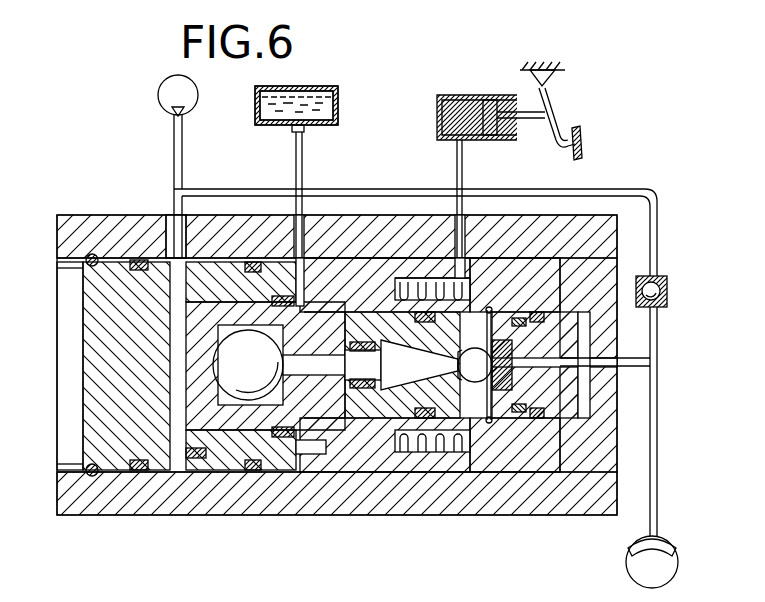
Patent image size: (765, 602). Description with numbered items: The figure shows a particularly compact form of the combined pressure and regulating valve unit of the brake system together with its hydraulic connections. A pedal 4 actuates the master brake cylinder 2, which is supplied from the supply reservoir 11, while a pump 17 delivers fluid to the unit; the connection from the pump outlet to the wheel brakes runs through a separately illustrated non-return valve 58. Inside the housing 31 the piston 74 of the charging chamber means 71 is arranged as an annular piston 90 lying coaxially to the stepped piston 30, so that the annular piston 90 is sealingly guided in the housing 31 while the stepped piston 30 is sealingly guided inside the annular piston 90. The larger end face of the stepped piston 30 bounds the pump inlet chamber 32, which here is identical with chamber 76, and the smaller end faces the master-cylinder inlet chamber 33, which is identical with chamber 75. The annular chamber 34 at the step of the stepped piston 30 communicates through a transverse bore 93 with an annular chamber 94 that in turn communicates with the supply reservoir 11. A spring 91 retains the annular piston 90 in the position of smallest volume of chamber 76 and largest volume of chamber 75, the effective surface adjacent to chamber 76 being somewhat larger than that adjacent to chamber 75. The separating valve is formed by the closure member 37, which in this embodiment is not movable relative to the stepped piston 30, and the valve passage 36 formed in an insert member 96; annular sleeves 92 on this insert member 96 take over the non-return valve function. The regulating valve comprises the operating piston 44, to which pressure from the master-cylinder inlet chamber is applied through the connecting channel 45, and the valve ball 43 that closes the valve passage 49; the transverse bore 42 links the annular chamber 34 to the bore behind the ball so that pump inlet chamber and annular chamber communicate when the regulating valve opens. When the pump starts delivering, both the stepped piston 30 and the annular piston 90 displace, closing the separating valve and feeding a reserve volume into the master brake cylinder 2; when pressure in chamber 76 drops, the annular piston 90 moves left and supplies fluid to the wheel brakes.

The master brake cylinder 2 is at (496, 140).
The pedal 4 is at (556, 145).
The supply reservoir 11 is at (340, 108).
The pump 17 is at (158, 95).
The stepped piston 30 is at (422, 265).
The housing 31 is at (578, 500).
The pump inlet chamber 32 is at (185, 250).
The master-cylinder inlet chamber 33 is at (490, 475).
The annular chamber 34 is at (330, 440).
The valve passage 36 is at (570, 372).
The closure member 37 is at (570, 300).
The transverse bore 42 is at (316, 450).
The valve ball 43 is at (232, 395).
The operating piston 44 is at (352, 262).
The connecting channel 45 is at (520, 310).
The valve passage 49 is at (142, 475).
The non-return valve 58 is at (668, 288).
The charging chamber means 71 is at (404, 250).
The piston 74 is at (305, 262).
The chamber 75 is at (450, 475).
The chamber 76 is at (232, 262).
The annular piston 90 is at (283, 262).
The spring 91 is at (490, 300).
The annular sleeves 92 is at (560, 430).
The transverse bore 93 is at (358, 440).
The annular chamber 94 is at (292, 445).
The insert member 96 is at (545, 405).